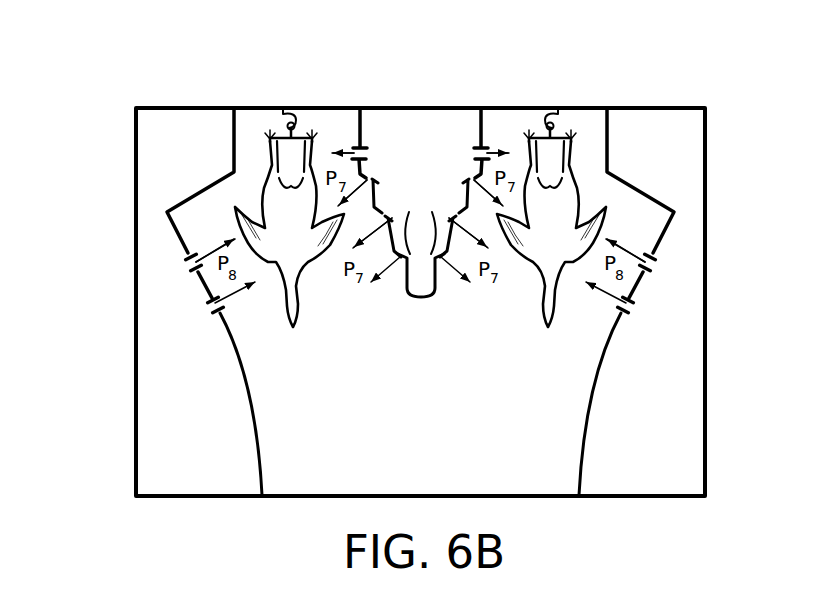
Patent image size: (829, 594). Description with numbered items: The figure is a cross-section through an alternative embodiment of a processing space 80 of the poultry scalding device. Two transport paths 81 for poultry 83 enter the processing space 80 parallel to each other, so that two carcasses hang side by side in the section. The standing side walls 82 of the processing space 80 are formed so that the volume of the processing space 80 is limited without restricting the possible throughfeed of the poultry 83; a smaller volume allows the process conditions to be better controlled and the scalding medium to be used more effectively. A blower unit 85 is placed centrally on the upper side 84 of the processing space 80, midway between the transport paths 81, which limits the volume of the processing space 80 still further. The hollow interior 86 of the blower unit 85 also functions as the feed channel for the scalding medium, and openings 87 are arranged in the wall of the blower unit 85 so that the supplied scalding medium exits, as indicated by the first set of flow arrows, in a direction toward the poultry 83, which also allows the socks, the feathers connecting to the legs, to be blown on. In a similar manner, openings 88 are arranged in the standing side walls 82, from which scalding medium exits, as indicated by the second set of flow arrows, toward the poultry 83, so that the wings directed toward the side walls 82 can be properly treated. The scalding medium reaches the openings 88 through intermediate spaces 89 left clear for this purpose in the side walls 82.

The processing space 80 is at (99, 104).
The transport path 81 is at (283, 108).
The standing side wall 82 is at (255, 405).
The poultry 83 is at (302, 268).
The upper side 84 is at (377, 107).
The blower unit 85 is at (428, 305).
The hollow interior 86 is at (424, 142).
The opening 87 is at (455, 212).
The opening 88 is at (207, 311).
The intermediate space 89 is at (188, 140).